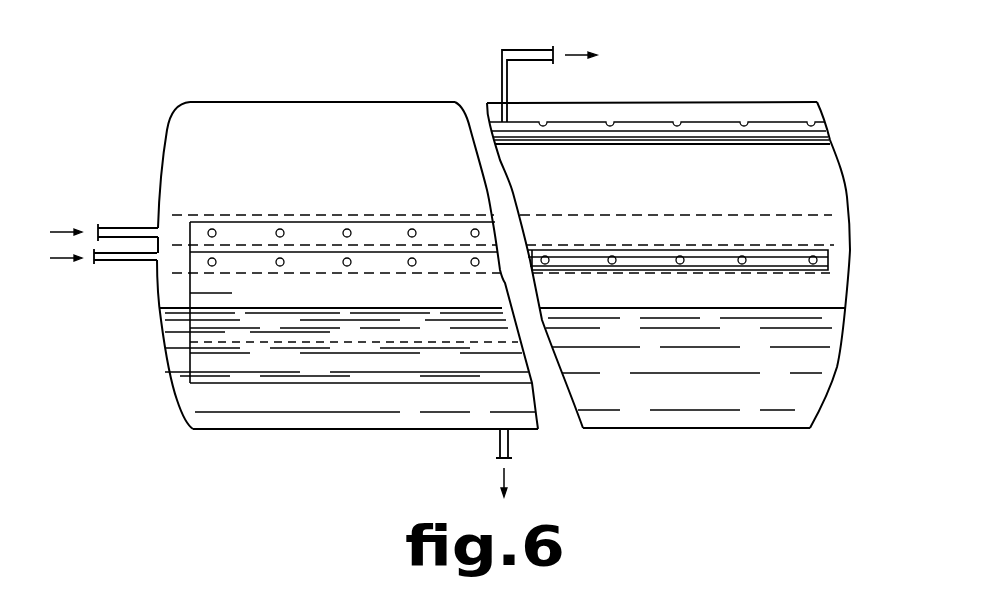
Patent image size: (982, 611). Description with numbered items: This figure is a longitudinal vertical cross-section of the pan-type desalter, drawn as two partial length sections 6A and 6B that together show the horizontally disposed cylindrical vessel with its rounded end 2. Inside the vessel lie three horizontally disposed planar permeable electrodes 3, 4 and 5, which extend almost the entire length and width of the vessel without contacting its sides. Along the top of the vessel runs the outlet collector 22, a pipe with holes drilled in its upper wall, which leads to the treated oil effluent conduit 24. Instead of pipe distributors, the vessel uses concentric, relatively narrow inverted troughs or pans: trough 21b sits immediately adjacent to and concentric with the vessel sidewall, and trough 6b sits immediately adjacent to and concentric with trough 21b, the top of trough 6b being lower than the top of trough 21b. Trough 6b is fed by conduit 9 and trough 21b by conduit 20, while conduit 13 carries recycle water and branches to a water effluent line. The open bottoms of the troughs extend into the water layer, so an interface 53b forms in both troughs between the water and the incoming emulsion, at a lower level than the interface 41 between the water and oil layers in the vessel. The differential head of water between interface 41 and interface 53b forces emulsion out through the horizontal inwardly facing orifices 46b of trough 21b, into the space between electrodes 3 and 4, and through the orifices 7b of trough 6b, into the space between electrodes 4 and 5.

The partial length section 6A is at (350, 96).
The partial length section 6B is at (690, 95).
The rounded end 2 is at (840, 163).
The electrode 3 is at (663, 215).
The electrode 4 is at (663, 245).
The electrode 5 is at (663, 275).
The outlet collector 22 is at (770, 122).
The treated oil effluent conduit 24 is at (523, 50).
The conduit 20 is at (120, 228).
The conduit 9 is at (120, 262).
The inverted trough 21b is at (192, 223).
The orifices 46b is at (215, 228).
The inverted trough 6b is at (314, 262).
The orifices 7b is at (347, 266).
The interface 41 is at (443, 308).
The interface 53b is at (204, 343).
The conduit 13 is at (508, 443).